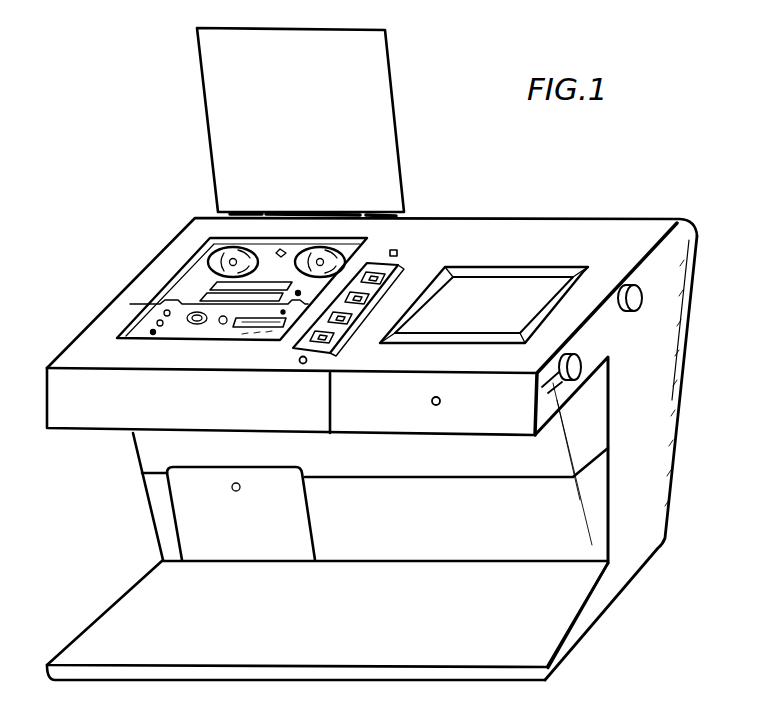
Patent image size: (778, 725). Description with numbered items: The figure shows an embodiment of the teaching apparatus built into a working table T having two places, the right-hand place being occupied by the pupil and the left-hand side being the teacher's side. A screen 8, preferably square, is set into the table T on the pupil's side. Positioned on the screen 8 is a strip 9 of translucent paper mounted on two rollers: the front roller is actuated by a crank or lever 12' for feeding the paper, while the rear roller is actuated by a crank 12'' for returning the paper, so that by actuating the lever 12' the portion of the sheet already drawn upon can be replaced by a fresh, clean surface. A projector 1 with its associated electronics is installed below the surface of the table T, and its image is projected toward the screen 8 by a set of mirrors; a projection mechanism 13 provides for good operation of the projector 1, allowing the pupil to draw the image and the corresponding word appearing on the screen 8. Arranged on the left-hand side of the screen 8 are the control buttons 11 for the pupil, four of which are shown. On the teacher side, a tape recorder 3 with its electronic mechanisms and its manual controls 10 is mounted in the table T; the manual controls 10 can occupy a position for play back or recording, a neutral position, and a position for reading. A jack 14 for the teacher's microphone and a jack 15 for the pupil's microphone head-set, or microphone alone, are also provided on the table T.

The projector 1 is at (232, 490).
The tape recorder 3 is at (202, 275).
The screen 8 is at (569, 268).
The strip of translucent paper 9 is at (528, 293).
The manual controls 10 is at (153, 313).
The control buttons 11 is at (392, 282).
The lever 12' is at (639, 356).
The crank 12'' is at (680, 280).
The projection mechanism 13 is at (434, 410).
The jack 14 is at (395, 252).
The jack 15 is at (303, 361).
The working table T is at (648, 462).